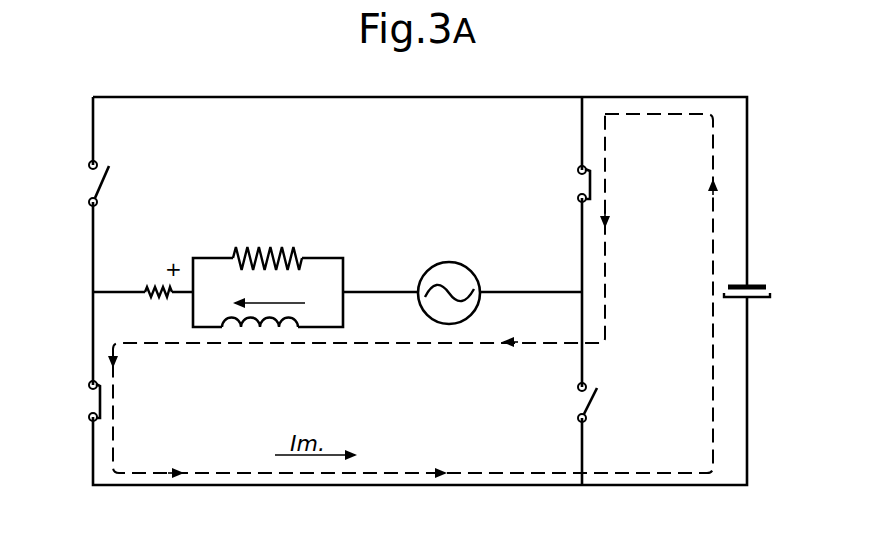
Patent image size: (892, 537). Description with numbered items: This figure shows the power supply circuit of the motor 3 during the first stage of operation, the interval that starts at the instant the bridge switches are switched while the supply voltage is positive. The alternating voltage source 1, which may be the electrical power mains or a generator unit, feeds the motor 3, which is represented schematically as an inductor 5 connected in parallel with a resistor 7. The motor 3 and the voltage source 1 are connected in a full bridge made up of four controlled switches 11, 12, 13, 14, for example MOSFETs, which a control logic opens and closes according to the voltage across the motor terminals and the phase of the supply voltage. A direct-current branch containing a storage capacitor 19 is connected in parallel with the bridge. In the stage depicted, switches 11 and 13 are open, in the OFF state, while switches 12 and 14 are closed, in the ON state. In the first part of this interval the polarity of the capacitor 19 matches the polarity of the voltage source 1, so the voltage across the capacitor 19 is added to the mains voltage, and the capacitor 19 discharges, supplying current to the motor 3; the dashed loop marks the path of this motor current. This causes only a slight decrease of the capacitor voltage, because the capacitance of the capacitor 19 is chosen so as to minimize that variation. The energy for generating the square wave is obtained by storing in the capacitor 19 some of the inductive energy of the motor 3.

The alternating voltage source 1 is at (460, 272).
The motor 3 is at (287, 295).
The inductor 5 is at (272, 340).
The resistor 7 is at (285, 250).
The controlled switch 11 is at (84, 180).
The controlled switch 12 is at (578, 188).
The controlled switch 13 is at (578, 401).
The controlled switch 14 is at (88, 401).
The storage capacitor 19 is at (756, 298).